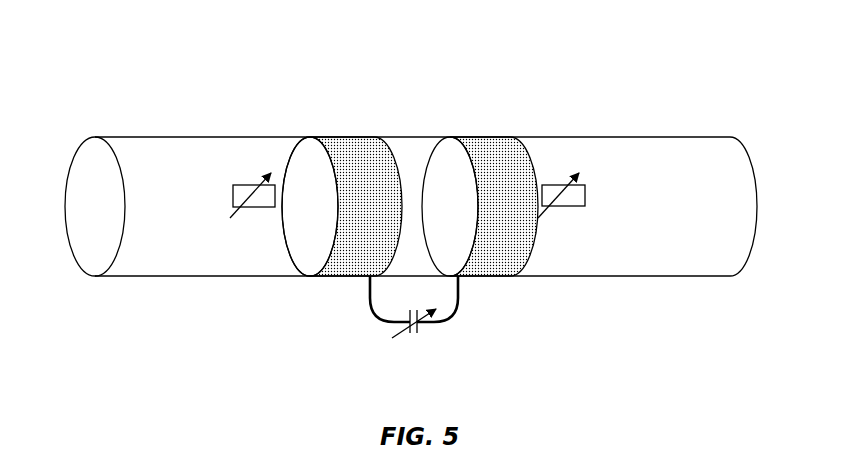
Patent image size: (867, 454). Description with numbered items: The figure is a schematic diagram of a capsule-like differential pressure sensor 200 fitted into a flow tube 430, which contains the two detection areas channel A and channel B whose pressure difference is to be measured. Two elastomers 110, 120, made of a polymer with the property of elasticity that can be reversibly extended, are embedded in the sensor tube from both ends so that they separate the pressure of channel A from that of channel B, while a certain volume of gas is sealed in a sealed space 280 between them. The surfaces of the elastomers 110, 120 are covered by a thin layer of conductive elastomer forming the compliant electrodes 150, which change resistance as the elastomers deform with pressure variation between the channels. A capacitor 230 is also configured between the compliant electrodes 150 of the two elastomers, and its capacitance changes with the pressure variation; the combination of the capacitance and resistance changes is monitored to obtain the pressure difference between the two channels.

The differential pressure sensor 200 is at (131, 38).
The elastomer 110 is at (347, 139).
The elastomer 120 is at (502, 147).
The compliant electrodes 150 is at (313, 270).
The sealed space 280 is at (413, 147).
The capacitor 230 is at (458, 302).
The flow tube 430 is at (628, 277).